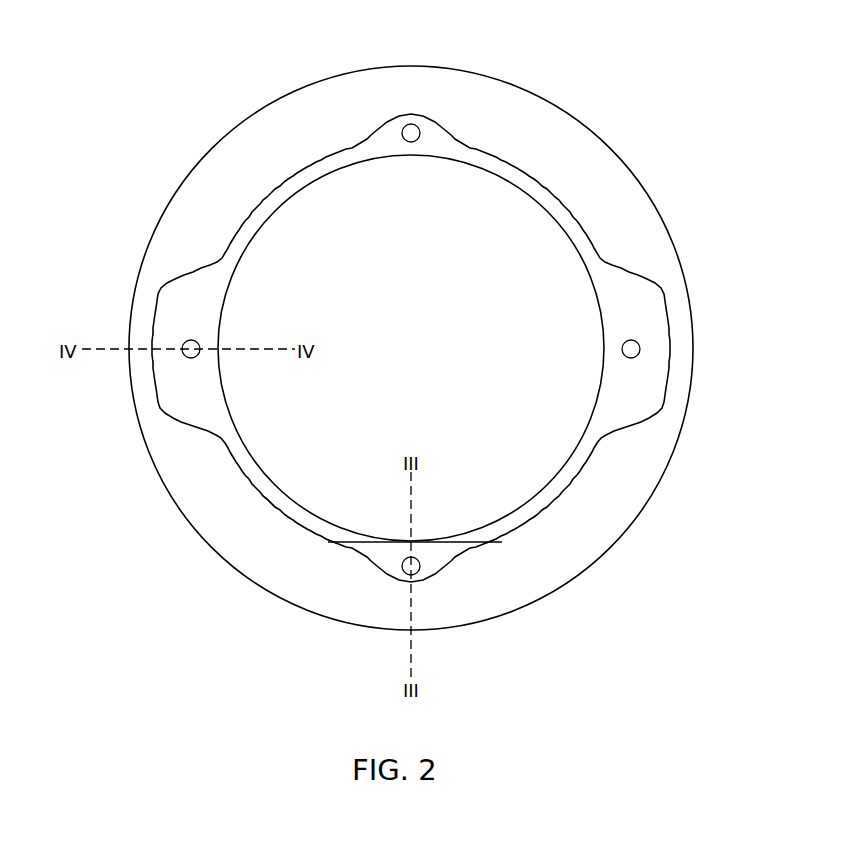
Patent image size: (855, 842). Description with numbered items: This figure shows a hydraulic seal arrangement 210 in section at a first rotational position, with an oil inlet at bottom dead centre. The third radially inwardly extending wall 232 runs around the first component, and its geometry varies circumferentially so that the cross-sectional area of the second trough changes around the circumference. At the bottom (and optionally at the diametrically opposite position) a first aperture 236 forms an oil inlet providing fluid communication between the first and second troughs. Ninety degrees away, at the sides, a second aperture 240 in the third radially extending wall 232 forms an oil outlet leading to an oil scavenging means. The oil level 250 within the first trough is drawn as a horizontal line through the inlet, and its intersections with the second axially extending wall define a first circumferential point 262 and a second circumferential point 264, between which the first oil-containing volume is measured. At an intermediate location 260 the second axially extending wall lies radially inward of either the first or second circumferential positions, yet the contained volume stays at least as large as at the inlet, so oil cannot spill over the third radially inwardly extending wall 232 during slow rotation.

The hydraulic seal arrangement 210 is at (623, 82).
The third radially inwardly extending wall 232 is at (310, 165).
The first aperture 236 is at (413, 124).
The second aperture 240 is at (192, 358).
The oil level 250 is at (362, 544).
The location 260 is at (270, 508).
The first circumferential point 262 is at (329, 545).
The second circumferential point 264 is at (498, 543).